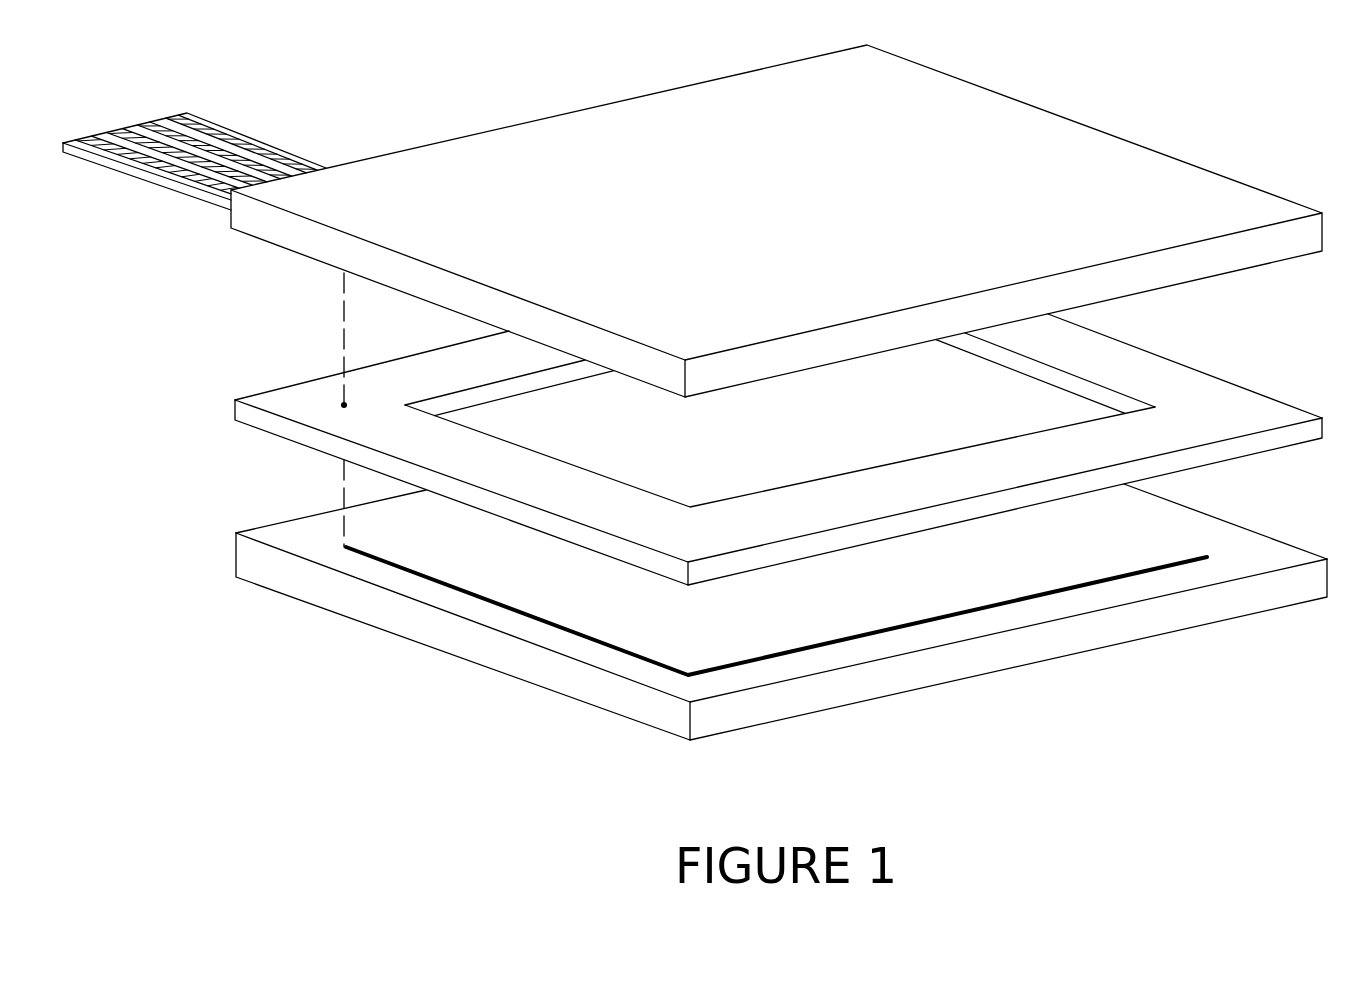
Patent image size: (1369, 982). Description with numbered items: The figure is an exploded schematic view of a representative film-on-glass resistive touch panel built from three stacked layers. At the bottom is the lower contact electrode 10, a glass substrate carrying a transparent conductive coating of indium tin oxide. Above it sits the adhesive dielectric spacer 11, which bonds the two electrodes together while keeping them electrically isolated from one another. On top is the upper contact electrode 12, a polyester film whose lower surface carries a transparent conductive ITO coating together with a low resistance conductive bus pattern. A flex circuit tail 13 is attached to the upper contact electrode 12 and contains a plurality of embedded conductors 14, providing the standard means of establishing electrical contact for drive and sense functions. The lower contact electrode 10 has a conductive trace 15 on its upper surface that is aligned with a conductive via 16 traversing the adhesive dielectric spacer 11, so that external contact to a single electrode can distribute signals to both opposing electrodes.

The lower contact electrode 10 is at (1288, 607).
The adhesive dielectric spacer 11 is at (1285, 447).
The upper contact electrode 12 is at (1280, 262).
The flex circuit tail 13 is at (267, 137).
The embedded conductors 14 is at (137, 122).
The conductive trace 15 is at (393, 562).
The conductive via 16 is at (347, 413).